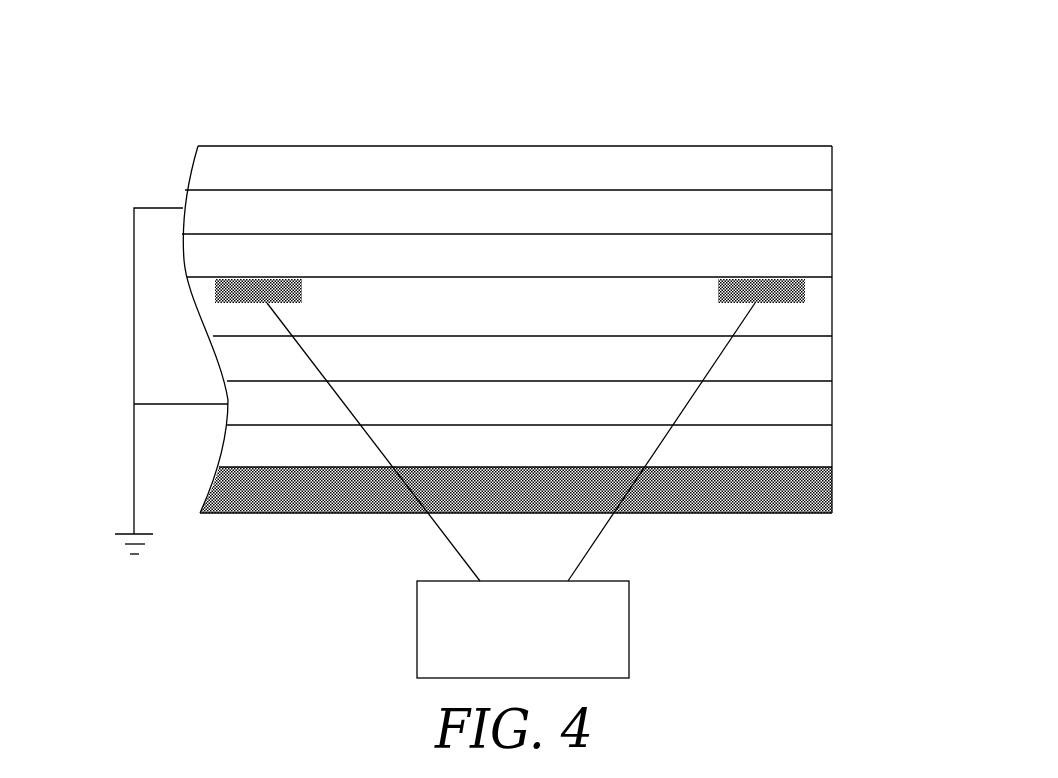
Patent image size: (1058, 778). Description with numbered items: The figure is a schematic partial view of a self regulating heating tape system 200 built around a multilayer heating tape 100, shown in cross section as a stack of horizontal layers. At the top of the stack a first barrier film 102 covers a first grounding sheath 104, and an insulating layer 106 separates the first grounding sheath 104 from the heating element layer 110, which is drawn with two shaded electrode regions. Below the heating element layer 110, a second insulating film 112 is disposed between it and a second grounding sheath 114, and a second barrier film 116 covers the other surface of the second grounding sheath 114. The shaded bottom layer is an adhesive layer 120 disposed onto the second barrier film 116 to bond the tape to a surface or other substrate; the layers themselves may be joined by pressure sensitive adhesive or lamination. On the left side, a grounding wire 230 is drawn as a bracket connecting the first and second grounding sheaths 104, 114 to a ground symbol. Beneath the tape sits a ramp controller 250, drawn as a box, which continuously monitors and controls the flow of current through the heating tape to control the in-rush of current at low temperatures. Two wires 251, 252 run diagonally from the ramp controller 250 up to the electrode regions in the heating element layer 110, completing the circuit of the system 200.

The self regulating heating tape system 200 is at (815, 29).
The heating tape 100 is at (875, 121).
The first barrier film 102 is at (832, 165).
The first grounding sheath 104 is at (832, 210).
The insulating layer 106 is at (832, 253).
The heating element layer 110 is at (832, 310).
The second insulating film 112 is at (832, 361).
The second grounding sheath 114 is at (832, 403).
The second barrier film 116 is at (832, 447).
The adhesive layer 120 is at (832, 492).
The grounding wire 230 is at (134, 460).
The ramp controller 250 is at (629, 632).
The wire 251 is at (430, 543).
The wire 252 is at (597, 540).